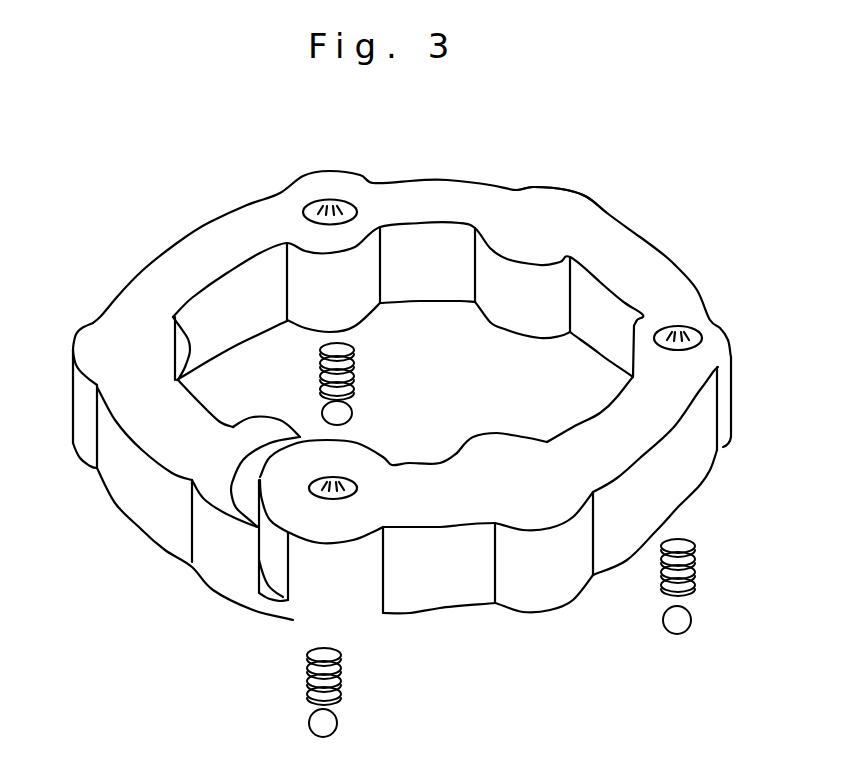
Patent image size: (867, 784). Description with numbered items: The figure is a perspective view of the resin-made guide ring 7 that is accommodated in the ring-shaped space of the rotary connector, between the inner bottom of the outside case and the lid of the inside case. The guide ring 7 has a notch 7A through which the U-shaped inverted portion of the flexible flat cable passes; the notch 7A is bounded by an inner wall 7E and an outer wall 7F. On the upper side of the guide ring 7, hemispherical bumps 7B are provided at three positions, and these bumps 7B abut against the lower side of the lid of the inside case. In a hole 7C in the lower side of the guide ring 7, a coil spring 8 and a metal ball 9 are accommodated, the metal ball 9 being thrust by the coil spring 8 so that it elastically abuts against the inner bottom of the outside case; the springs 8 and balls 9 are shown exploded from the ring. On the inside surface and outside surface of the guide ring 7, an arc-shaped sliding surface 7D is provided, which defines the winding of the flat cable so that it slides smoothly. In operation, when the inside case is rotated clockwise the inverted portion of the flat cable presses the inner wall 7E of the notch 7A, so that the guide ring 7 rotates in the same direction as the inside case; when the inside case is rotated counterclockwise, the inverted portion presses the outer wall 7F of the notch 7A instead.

The guide ring 7 is at (497, 182).
The notch 7A is at (242, 493).
The hemispherical bumps 7B is at (682, 323).
The hole 7C is at (722, 452).
The arc-shaped sliding surface 7D is at (583, 185).
The inner wall of the notch 7E is at (270, 482).
The outer wall of the notch 7F is at (227, 470).
The coil spring 8 is at (698, 565).
The metal ball 9 is at (689, 621).